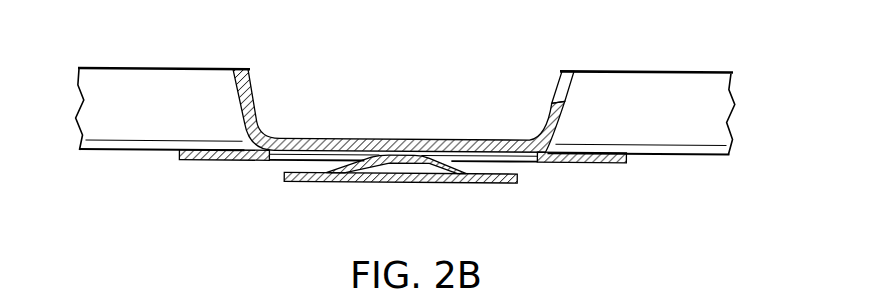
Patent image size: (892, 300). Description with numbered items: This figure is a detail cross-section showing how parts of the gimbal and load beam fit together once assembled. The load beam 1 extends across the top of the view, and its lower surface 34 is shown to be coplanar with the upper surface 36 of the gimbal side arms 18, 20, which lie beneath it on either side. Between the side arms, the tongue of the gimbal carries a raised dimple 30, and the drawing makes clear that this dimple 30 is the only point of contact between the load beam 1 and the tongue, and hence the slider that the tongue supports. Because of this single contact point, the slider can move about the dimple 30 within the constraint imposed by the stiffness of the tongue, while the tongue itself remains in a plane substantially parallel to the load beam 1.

The load beam 1 is at (222, 48).
The lower surface 34 is at (113, 150).
The gimbal side arm 18 is at (189, 194).
The upper surface 36 is at (225, 160).
The gimbal side arm 20 is at (587, 163).
The dimple 30 is at (427, 160).